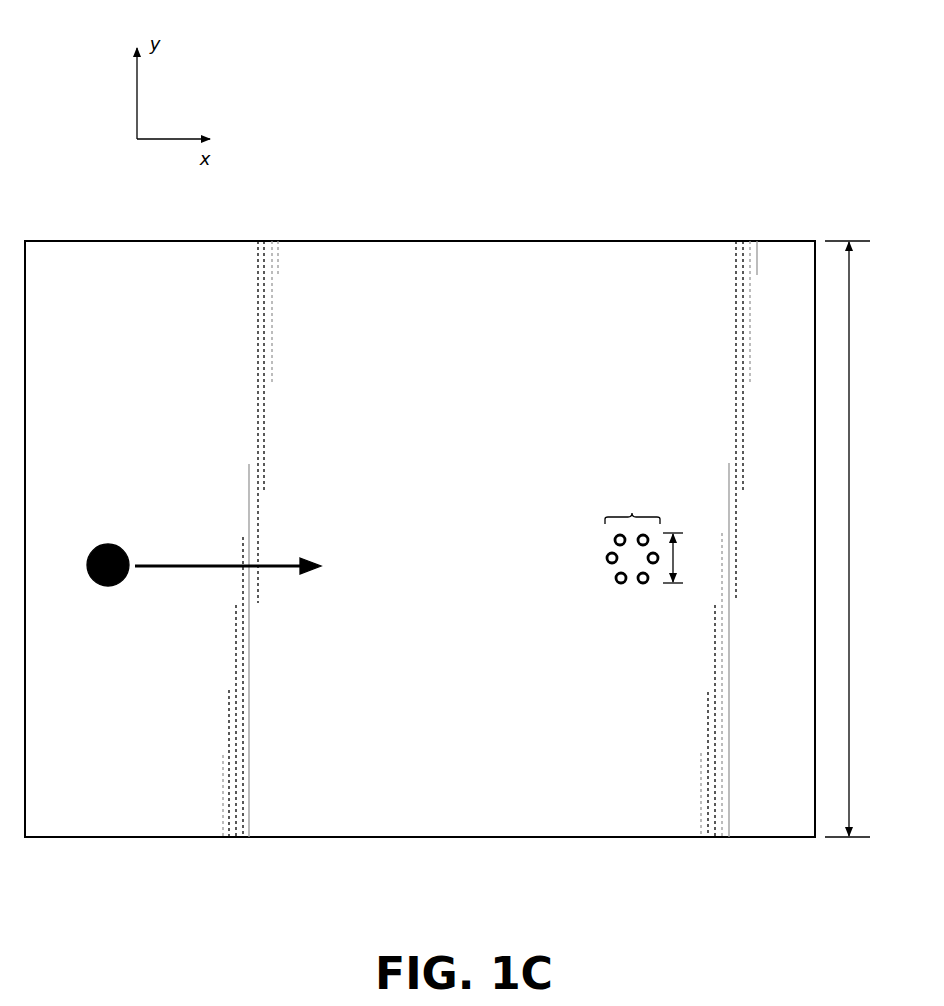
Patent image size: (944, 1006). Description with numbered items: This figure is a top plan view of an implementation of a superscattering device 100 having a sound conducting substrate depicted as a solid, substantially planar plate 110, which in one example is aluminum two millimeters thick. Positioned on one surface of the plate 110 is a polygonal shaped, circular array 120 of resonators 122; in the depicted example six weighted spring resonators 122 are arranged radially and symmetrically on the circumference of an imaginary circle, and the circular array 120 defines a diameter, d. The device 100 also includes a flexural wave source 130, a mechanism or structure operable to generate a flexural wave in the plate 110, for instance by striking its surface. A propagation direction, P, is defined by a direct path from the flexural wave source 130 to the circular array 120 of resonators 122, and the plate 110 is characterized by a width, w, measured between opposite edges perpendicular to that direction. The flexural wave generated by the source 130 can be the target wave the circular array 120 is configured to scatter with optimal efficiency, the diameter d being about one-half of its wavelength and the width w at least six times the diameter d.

The superscattering device 100 is at (777, 97).
The plate 110 is at (527, 240).
The circular array 120 is at (632, 513).
The resonator 122 is at (610, 565).
The flexural wave source 130 is at (114, 544).